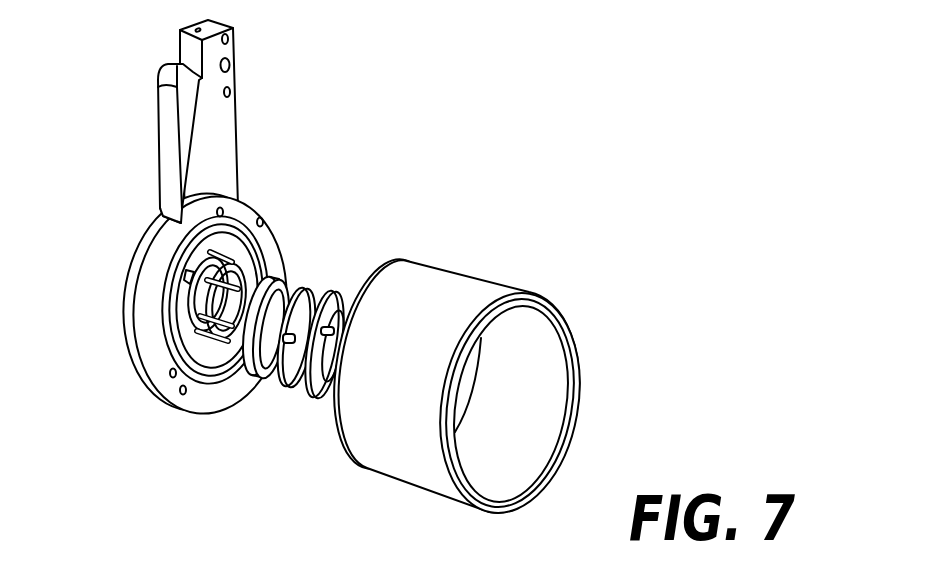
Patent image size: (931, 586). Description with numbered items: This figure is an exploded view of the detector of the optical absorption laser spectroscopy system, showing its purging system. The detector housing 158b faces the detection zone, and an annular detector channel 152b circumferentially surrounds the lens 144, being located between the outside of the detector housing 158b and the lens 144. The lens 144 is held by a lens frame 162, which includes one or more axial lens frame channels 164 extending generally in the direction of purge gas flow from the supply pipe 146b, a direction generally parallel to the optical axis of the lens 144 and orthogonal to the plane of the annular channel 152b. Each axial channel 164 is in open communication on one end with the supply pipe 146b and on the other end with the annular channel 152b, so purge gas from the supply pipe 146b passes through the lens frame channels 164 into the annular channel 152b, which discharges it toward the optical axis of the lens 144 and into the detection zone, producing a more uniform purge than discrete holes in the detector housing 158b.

The detector housing 158b is at (148, 352).
The annular detector channel 152b is at (195, 296).
The lens frame 162 is at (240, 253).
The axial lens frame channels 164 is at (222, 278).
The lens 144 is at (285, 282).
The supply pipe 146b is at (452, 286).